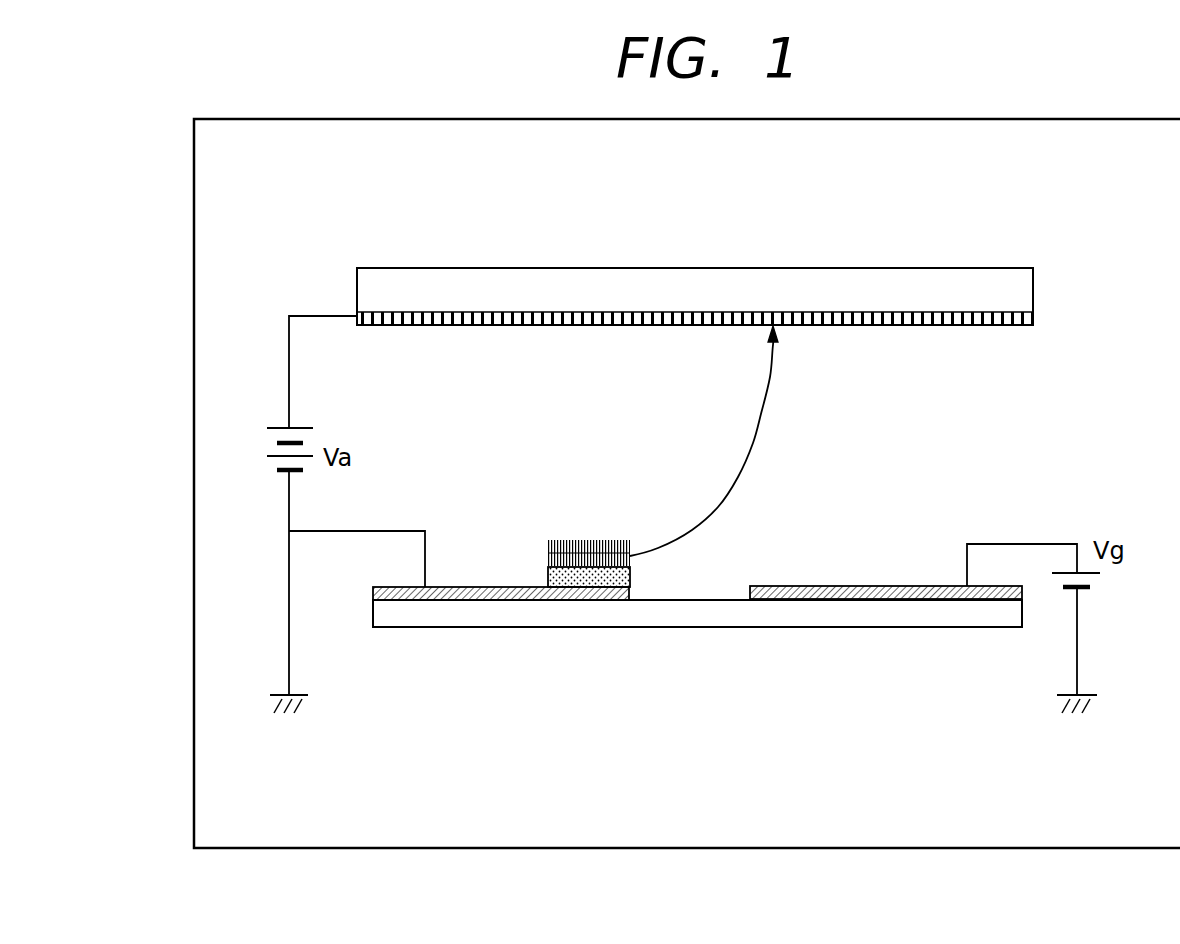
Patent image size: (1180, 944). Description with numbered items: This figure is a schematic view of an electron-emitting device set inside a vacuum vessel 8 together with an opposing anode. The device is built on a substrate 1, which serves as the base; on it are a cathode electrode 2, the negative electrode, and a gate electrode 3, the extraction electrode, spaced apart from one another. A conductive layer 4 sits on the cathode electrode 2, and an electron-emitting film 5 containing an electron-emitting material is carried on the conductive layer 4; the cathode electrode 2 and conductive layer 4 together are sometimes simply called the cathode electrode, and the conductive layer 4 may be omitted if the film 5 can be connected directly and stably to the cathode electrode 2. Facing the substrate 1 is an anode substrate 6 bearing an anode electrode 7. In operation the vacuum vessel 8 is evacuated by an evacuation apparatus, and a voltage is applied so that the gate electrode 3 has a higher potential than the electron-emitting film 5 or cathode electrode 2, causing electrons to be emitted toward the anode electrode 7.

The substrate 1 is at (775, 617).
The cathode electrode 2 is at (508, 587).
The gate electrode 3 is at (900, 586).
The conductive layer 4 is at (630, 575).
The electron-emitting film 5 is at (548, 553).
The anode substrate 6 is at (916, 275).
The anode electrode 7 is at (1025, 318).
The vacuum vessel 8 is at (468, 850).